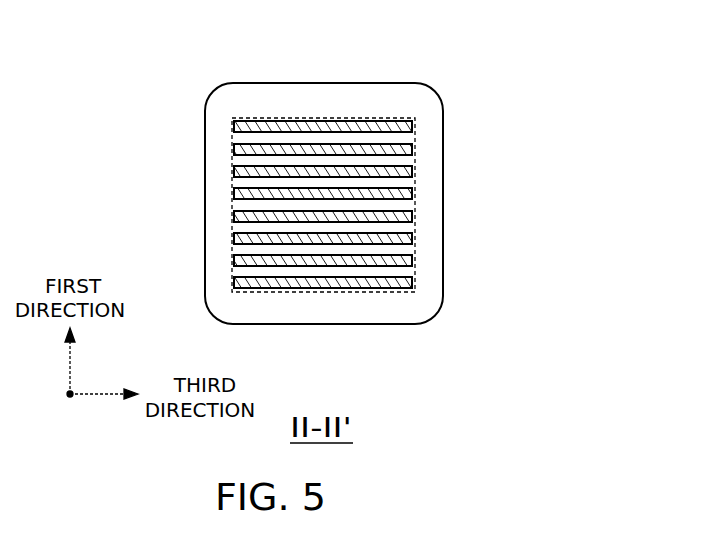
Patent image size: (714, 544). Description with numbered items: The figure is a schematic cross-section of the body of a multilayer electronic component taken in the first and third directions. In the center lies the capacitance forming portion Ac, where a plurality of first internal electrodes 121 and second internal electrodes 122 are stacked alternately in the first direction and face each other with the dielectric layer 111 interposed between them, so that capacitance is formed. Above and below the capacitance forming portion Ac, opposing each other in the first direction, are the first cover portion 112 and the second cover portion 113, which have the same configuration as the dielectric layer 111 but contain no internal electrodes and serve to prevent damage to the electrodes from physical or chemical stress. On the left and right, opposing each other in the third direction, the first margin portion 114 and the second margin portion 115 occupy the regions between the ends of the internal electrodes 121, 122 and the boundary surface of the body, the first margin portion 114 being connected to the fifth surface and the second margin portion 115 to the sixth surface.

The dielectric layer 111 is at (403, 140).
The first cover portion 112 is at (323, 98).
The second cover portion 113 is at (320, 312).
The first margin portion 114 is at (214, 232).
The second margin portion 115 is at (432, 234).
The first internal electrode 121 is at (404, 123).
The second internal electrode 122 is at (405, 150).
The capacitance forming portion Ac is at (233, 207).